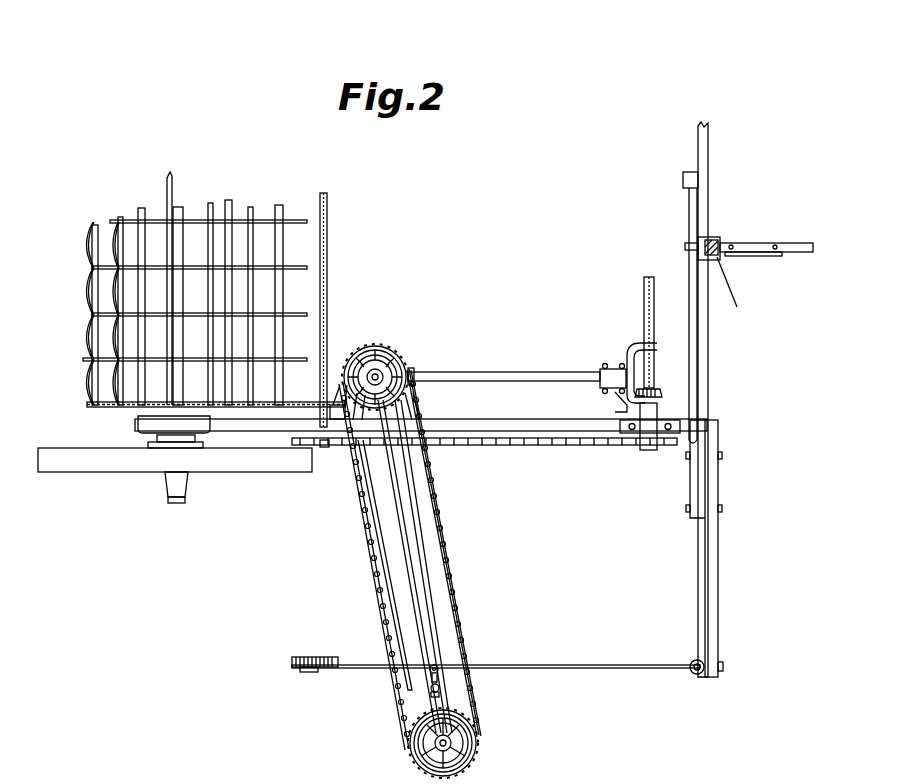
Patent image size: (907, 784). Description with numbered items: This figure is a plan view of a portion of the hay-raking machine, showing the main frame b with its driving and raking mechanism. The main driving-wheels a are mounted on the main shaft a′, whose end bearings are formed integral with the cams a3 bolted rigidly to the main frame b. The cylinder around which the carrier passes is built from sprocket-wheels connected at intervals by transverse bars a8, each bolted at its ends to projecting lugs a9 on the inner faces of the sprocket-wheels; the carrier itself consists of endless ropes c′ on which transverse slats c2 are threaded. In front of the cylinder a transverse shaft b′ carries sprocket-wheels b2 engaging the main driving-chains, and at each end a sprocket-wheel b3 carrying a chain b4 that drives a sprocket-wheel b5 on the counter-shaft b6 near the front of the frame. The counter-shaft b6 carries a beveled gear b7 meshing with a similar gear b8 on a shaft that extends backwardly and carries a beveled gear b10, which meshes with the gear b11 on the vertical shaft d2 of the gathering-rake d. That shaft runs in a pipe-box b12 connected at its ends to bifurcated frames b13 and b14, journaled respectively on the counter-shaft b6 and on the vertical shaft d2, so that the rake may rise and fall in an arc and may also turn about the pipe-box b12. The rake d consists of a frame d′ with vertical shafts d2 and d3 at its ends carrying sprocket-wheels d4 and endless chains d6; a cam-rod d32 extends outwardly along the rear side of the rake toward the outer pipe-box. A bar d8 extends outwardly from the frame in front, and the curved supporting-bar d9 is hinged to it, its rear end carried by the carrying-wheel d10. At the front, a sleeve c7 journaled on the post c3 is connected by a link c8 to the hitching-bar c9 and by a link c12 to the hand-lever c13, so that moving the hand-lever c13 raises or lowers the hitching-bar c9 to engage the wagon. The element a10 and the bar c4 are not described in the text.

The main driving-wheels a is at (175, 475).
The main shaft a′ is at (172, 190).
The cams a3 is at (138, 430).
The transverse bars a8 is at (120, 250).
The projecting lugs a9 is at (237, 401).
The curved springs / hoops a10 is at (92, 292).
The main frame b is at (500, 430).
The transverse shaft b′ is at (327, 265).
The sprocket-wheels b2 is at (335, 400).
The sprocket-wheel b3 is at (330, 447).
The chains b4 is at (526, 446).
The sprocket-wheels b5 is at (645, 452).
The counter-shaft b6 is at (648, 306).
The beveled gear b7 is at (661, 389).
The beveled gear b8 is at (626, 370).
The beveled gear b10 is at (401, 352).
The beveled gear b11 is at (369, 347).
The pipe-box b12 is at (520, 375).
The bifurcated frame b13 is at (617, 395).
The bifurcated frame b14 is at (421, 391).
The endless ropes c′ is at (240, 232).
The transverse slats c2 is at (141, 212).
The post c3 is at (737, 290).
The rack bar c4 is at (278, 209).
The sleeve c7 is at (718, 237).
The link c8 is at (767, 256).
The hitching-bar c9 is at (787, 243).
The link c12 is at (696, 237).
The hand-lever c13 is at (690, 215).
The gathering-rakes d is at (410, 560).
The rake frame d′ is at (415, 566).
The vertical shaft d2 is at (384, 344).
The vertical shaft d3 is at (457, 734).
The sprocket-wheel d4 is at (408, 360).
The endless chain d6 is at (453, 594).
The bar d8 is at (712, 580).
The curved supporting-bar d9 is at (575, 665).
The carrying-wheel d10 is at (300, 656).
The cam-rod d32 is at (386, 566).